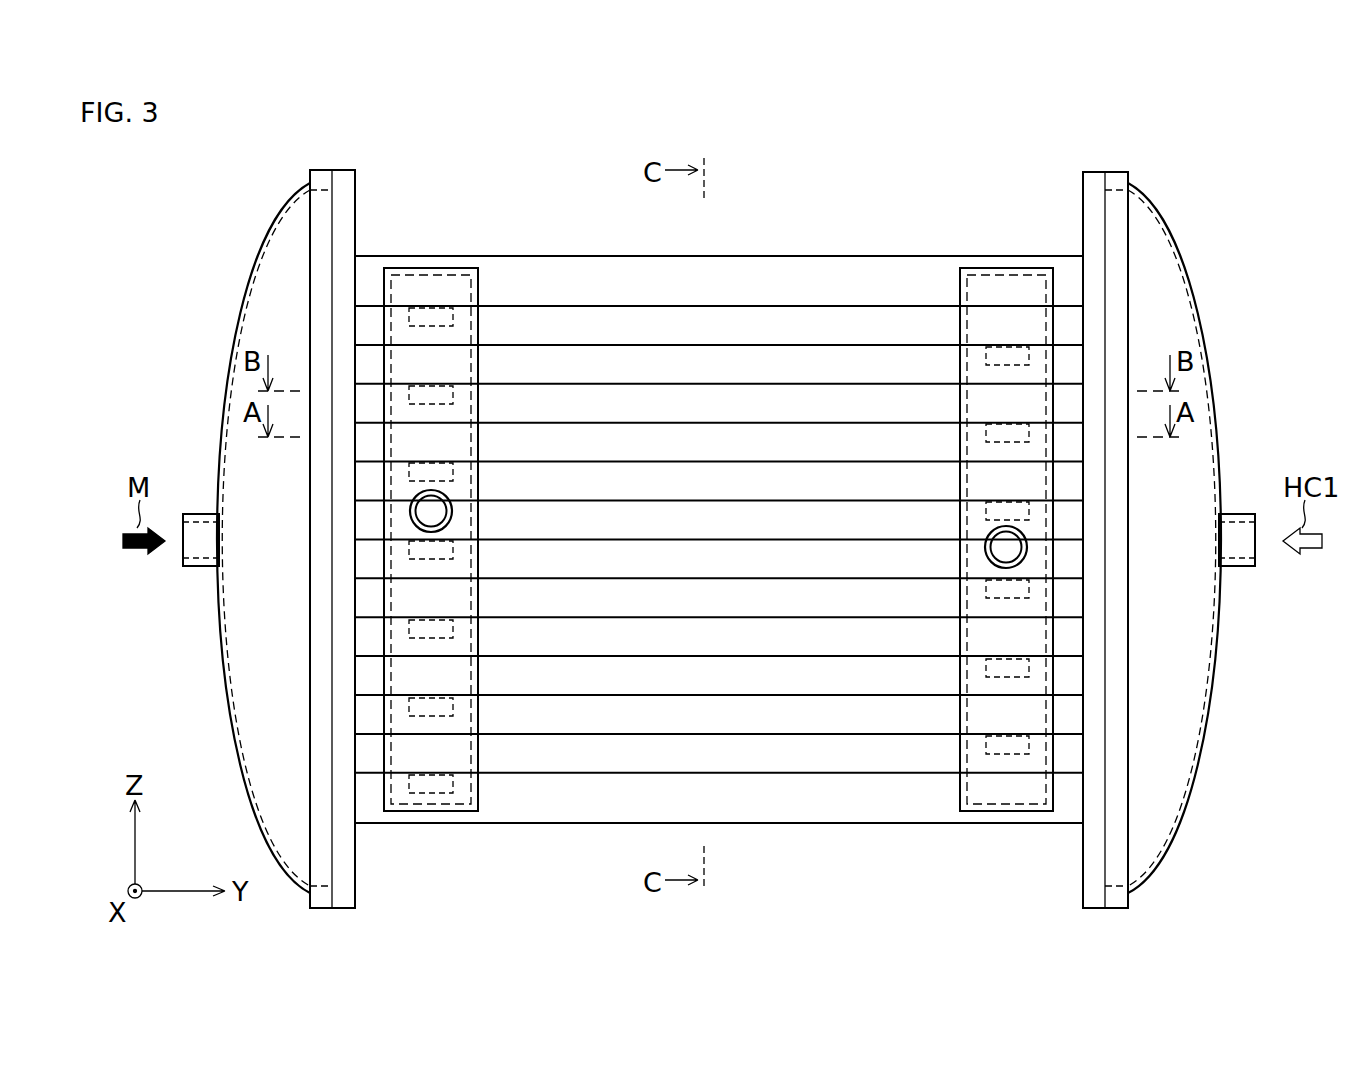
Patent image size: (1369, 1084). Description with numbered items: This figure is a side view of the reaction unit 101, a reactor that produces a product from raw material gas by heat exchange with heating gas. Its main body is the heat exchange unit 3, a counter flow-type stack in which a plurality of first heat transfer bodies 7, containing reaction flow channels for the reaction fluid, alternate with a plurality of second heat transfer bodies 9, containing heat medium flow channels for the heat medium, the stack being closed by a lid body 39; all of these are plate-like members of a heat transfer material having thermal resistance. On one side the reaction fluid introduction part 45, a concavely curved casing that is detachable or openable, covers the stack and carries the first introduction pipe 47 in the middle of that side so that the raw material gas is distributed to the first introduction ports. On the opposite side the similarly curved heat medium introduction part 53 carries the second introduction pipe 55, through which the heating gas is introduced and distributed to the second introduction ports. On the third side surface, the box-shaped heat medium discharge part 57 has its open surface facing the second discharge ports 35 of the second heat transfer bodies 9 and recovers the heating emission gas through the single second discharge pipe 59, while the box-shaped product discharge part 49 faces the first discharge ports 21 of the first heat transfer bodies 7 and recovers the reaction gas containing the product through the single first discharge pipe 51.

The reaction unit 101 is at (873, 200).
The heat exchange unit 3 is at (600, 255).
The lid body 39 is at (772, 265).
The second heat transfer body 9 is at (762, 315).
The first heat transfer body 7 is at (762, 353).
The reaction fluid introduction part 45 is at (262, 289).
The heat medium introduction part 53 is at (1183, 266).
The heat medium discharge part 57 is at (437, 268).
The product discharge part 49 is at (1005, 268).
The second discharge port 35 is at (430, 326).
The first discharge port 21 is at (1005, 363).
The second discharge pipe 59 is at (452, 516).
The first discharge pipe 51 is at (985, 551).
The first introduction pipe 47 is at (197, 514).
The second introduction pipe 55 is at (1242, 514).